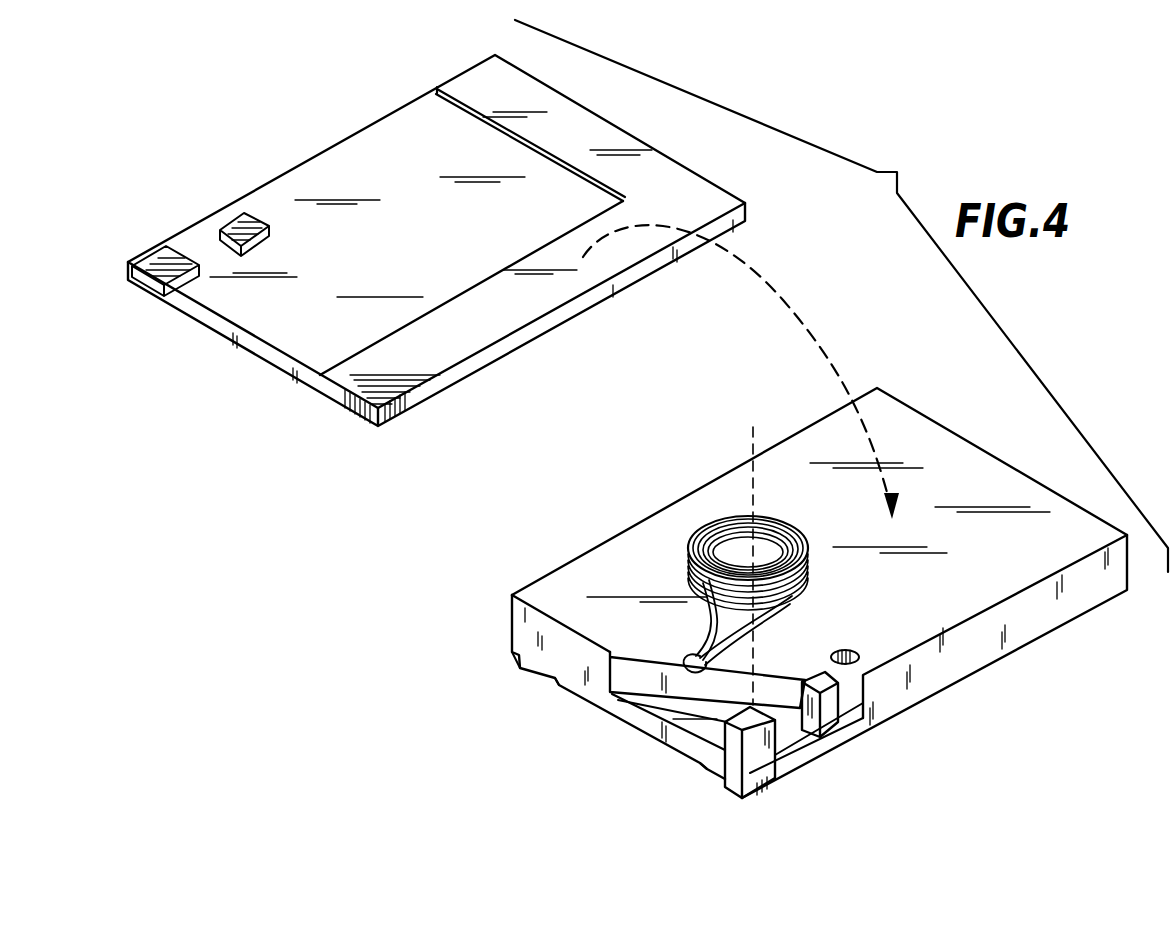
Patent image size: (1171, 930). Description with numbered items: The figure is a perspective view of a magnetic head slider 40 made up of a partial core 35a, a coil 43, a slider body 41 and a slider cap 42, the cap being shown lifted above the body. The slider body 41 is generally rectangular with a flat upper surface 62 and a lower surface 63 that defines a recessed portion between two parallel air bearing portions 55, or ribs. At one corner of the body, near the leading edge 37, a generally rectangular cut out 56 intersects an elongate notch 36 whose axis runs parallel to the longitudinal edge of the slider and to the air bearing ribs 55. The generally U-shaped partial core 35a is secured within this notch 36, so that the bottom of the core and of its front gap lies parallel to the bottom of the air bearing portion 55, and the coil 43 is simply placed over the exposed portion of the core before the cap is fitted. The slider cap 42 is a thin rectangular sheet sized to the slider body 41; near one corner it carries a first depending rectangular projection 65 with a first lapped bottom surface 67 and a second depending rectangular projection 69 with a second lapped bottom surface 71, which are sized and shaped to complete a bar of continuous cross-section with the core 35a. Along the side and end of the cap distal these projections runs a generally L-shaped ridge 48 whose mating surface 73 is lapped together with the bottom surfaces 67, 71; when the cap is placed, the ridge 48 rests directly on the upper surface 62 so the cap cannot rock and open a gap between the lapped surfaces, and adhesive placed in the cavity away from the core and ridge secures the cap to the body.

The partial core 35a is at (818, 666).
The elongate notch 36 is at (838, 652).
The leading edge 37 is at (540, 680).
The magnetic head slider 40 is at (841, 296).
The slider body 41 is at (972, 680).
The slider cap 42 is at (204, 341).
The coil 43 is at (712, 527).
The L-shaped ridge 48 is at (442, 96).
The air bearing portions 55 is at (558, 682).
The rectangular cut out 56 is at (647, 697).
The upper surface 62 is at (962, 447).
The lower surface 63 is at (670, 743).
The first depending rectangular projection 65 is at (164, 246).
The first lapped bottom surface 67 is at (176, 258).
The second depending rectangular projection 69 is at (234, 207).
The second lapped bottom surface 71 is at (244, 216).
The mating surface 73 is at (691, 188).